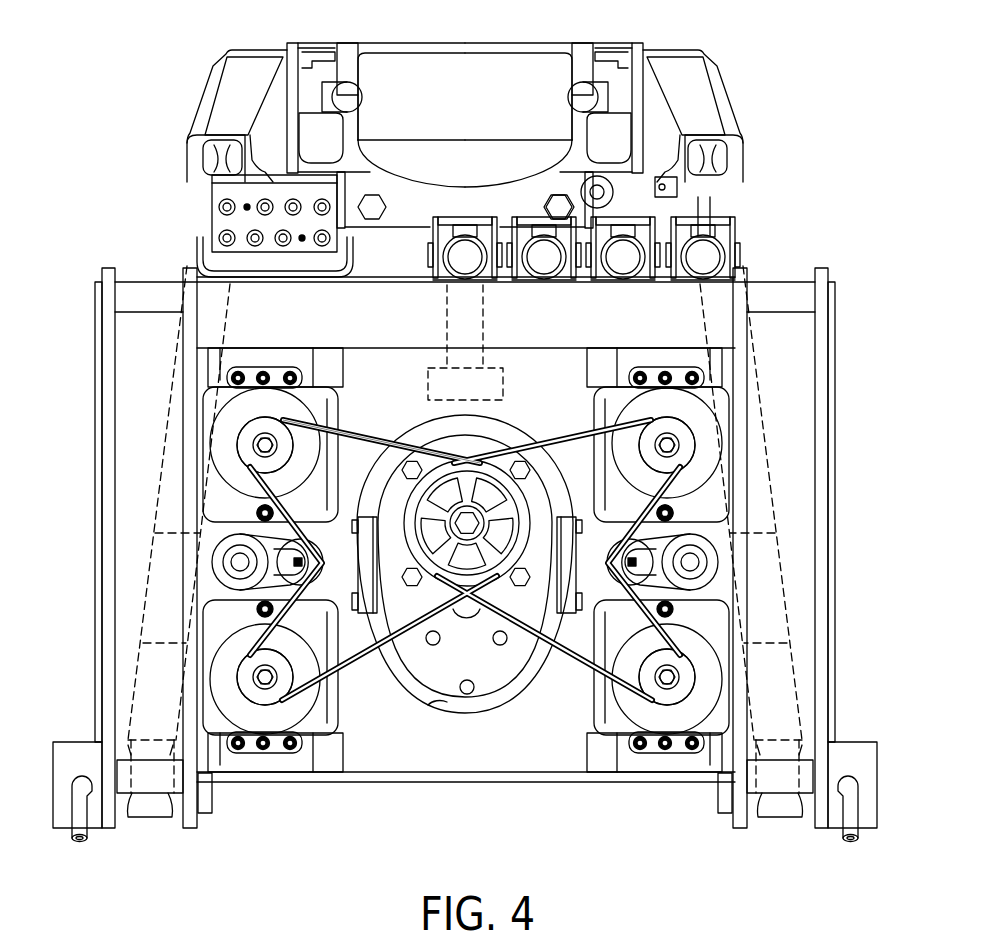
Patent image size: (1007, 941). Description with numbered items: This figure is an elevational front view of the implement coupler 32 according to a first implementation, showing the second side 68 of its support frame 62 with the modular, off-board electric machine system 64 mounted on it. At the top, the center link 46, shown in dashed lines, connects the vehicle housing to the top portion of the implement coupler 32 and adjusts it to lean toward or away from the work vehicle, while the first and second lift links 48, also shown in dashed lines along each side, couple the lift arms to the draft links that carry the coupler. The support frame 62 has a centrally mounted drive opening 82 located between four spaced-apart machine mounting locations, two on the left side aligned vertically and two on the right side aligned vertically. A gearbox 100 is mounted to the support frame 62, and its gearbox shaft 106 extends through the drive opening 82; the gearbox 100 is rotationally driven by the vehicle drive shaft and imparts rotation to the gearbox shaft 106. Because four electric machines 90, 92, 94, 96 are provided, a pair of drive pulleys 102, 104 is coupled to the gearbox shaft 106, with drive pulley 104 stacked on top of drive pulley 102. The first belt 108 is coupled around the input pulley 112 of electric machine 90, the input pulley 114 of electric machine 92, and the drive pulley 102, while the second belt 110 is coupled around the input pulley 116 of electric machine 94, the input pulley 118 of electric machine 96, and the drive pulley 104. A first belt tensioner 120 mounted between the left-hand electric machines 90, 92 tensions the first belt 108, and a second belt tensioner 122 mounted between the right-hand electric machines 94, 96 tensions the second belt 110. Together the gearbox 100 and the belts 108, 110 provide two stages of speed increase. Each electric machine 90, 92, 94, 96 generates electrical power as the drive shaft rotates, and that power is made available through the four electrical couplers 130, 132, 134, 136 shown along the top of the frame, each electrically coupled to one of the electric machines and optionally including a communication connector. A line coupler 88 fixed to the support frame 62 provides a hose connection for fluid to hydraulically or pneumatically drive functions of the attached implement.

The implement coupler 32 is at (808, 210).
The center link 46 is at (483, 325).
The lift link 48 is at (155, 533).
The support frame 62 is at (138, 262).
The electric machine system 64 is at (205, 572).
The second side 68 is at (405, 757).
The drive opening 82 is at (442, 703).
The line coupler 88 is at (225, 207).
The electric machine 90 is at (208, 443).
The electric machine 92 is at (208, 680).
The electric machine 94 is at (720, 443).
The electric machine 96 is at (713, 637).
The gearbox 100 is at (497, 672).
The drive pulley 102 is at (530, 548).
The drive pulley 104 is at (381, 441).
The gearbox shaft 106 is at (487, 502).
The first belt 108 is at (372, 440).
The second belt 110 is at (585, 663).
The input pulley 112 is at (243, 432).
The input pulley 114 is at (243, 668).
The input pulley 116 is at (685, 438).
The input pulley 118 is at (687, 683).
The first belt tensioner 120 is at (245, 528).
The second belt tensioner 122 is at (690, 525).
The electrical coupler 130 is at (717, 257).
The electrical coupler 132 is at (621, 268).
The electrical coupler 134 is at (543, 247).
The electrical coupler 136 is at (470, 250).